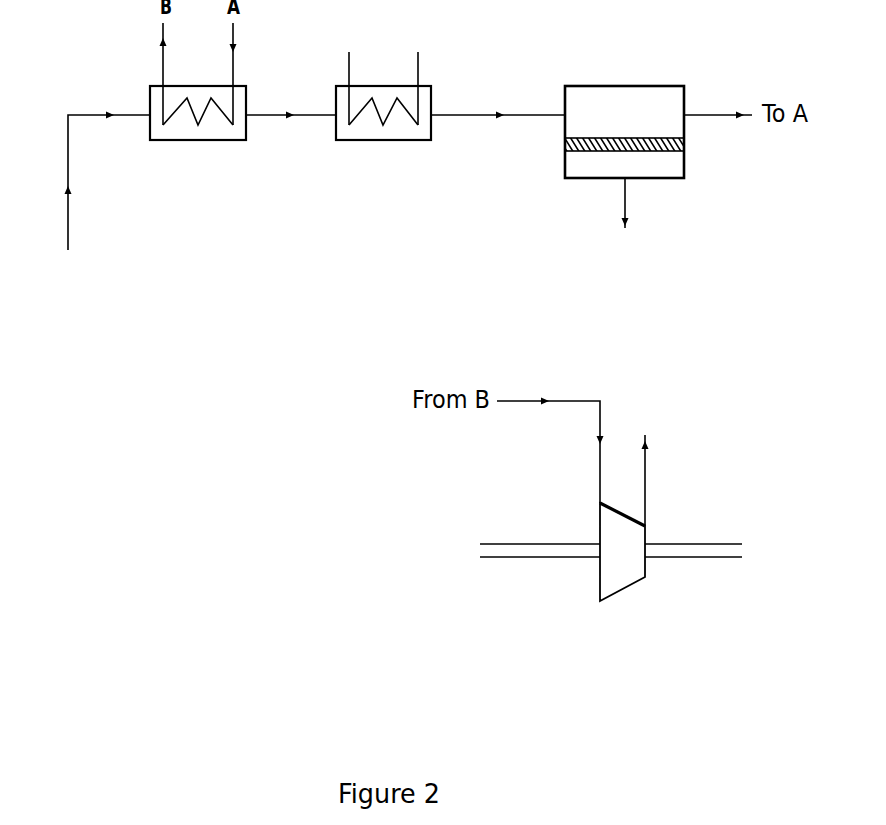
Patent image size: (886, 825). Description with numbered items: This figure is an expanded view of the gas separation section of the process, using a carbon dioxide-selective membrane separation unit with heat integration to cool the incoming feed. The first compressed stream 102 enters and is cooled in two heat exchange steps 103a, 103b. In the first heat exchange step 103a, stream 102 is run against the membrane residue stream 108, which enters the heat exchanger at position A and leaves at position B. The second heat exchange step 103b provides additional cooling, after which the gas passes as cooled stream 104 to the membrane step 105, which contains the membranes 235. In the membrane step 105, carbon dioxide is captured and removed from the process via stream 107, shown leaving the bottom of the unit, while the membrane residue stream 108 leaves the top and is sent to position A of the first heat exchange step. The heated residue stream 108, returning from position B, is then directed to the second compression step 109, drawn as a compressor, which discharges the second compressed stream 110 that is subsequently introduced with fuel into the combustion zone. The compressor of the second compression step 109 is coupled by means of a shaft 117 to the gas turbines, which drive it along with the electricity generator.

The first compressed stream 102 is at (86, 181).
The first heat exchange step 103a is at (197, 141).
The second heat exchange step 103b is at (382, 141).
The cooled stream 104 is at (498, 101).
The membrane step 105 is at (632, 85).
The membranes 235 is at (684, 143).
The membrane residue stream 108 is at (624, 293).
The carbon dioxide stream 107 is at (624, 221).
The second compression step 109 is at (620, 590).
The second compressed stream 110 is at (647, 465).
The shaft 117 is at (692, 543).